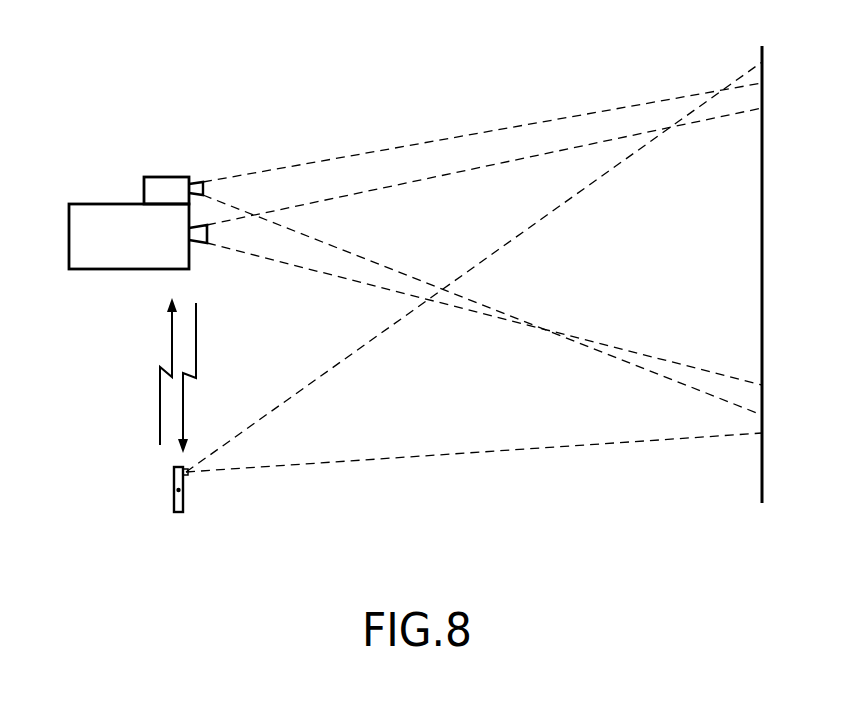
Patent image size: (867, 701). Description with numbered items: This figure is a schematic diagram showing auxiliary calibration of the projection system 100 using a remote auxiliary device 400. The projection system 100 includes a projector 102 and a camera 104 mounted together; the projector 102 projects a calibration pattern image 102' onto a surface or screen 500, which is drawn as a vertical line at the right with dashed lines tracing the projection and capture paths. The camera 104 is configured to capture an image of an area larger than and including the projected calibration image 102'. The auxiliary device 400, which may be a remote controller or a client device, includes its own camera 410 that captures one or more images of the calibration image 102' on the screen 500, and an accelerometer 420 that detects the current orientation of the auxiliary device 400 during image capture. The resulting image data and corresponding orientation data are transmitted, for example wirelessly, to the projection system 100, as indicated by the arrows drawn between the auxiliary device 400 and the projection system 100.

The projection system 100 is at (100, 78).
The projector 102 is at (415, 246).
The camera 104 is at (173, 177).
The calibration pattern image 102' is at (781, 224).
The auxiliary device 400 is at (174, 508).
The camera 410 is at (188, 477).
The accelerometer 420 is at (174, 490).
The screen 500 is at (762, 503).